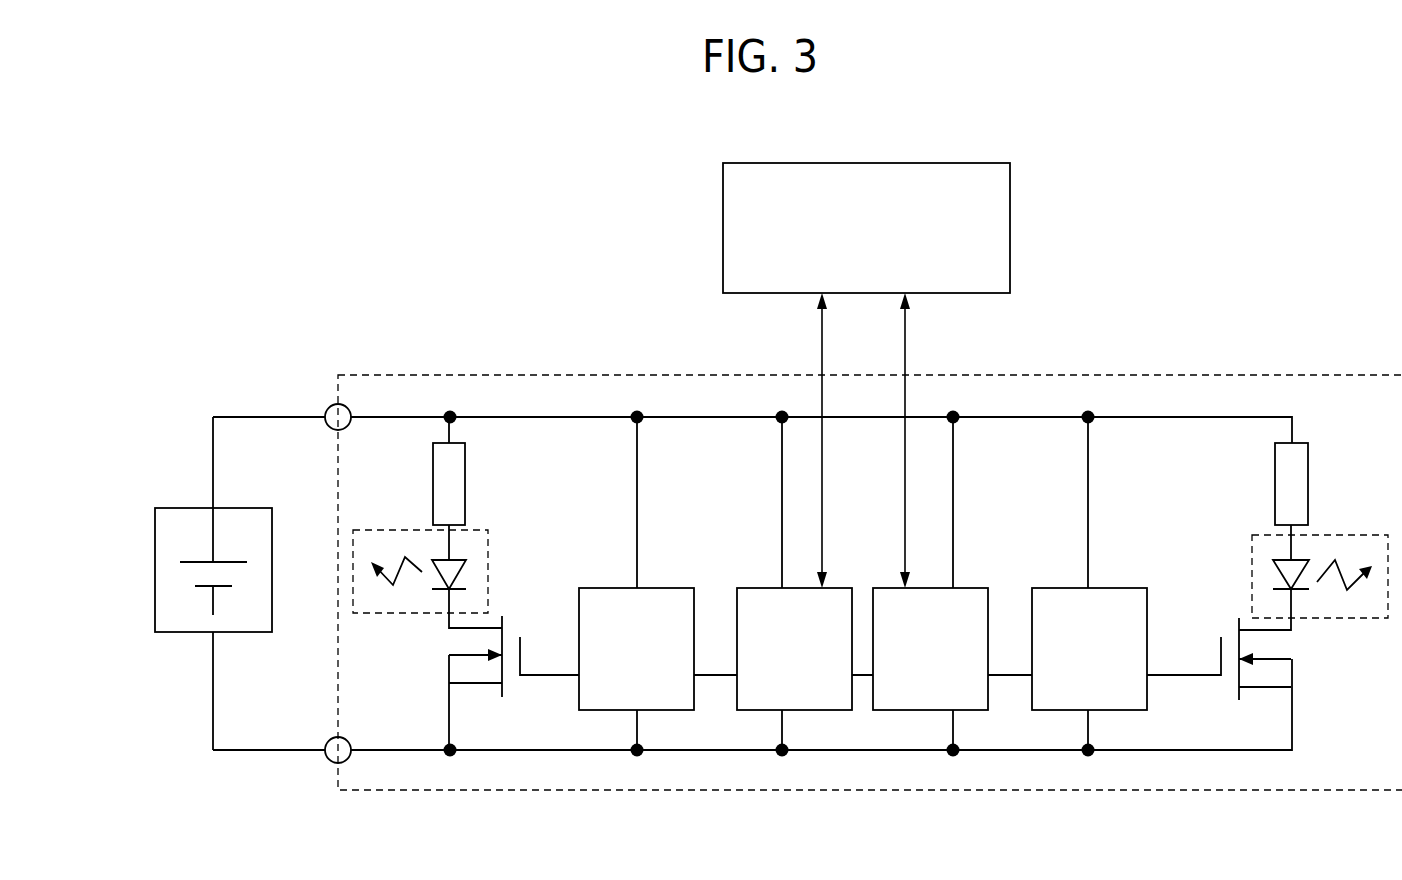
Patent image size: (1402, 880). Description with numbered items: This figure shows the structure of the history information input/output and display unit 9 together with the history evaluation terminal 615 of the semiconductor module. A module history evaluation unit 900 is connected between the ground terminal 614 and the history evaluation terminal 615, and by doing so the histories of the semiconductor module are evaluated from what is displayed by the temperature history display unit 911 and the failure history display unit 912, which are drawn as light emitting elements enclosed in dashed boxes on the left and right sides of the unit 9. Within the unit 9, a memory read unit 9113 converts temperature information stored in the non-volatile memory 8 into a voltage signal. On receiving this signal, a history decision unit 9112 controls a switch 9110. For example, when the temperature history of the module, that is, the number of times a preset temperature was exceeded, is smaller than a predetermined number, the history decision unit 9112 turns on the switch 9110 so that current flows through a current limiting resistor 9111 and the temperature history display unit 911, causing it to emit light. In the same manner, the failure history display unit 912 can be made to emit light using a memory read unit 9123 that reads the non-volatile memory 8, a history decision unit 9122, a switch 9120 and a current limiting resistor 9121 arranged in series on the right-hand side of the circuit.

The non-volatile memory 8 is at (863, 163).
The input/output and display unit 9 is at (1108, 375).
The module history evaluation unit 900 is at (185, 508).
The history evaluation terminal 615 is at (325, 408).
The ground terminal 614 is at (327, 760).
The temperature history display unit 911 is at (398, 530).
The current limiting resistor 9111 is at (465, 462).
The switch 9110 is at (513, 625).
The history decision unit 9112 is at (636, 649).
The memory read unit 9113 is at (794, 649).
The memory read unit 9123 is at (930, 649).
The history decision unit 9122 is at (1089, 649).
The switch 9120 is at (1228, 628).
The current limiting resistor 9121 is at (1296, 442).
The failure history display unit 912 is at (1355, 533).